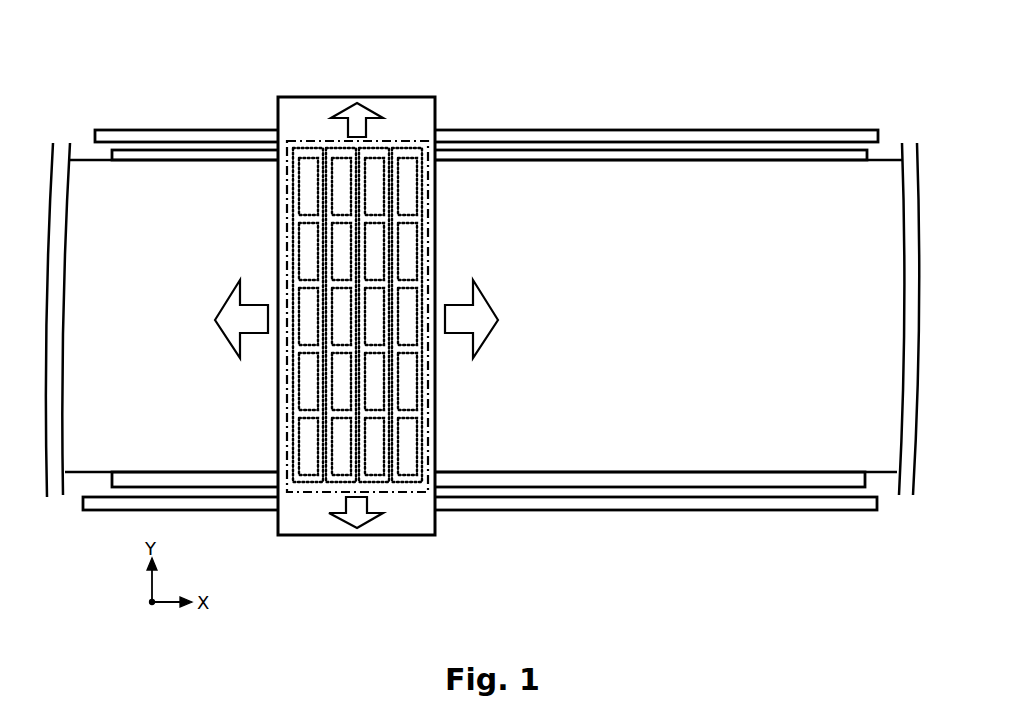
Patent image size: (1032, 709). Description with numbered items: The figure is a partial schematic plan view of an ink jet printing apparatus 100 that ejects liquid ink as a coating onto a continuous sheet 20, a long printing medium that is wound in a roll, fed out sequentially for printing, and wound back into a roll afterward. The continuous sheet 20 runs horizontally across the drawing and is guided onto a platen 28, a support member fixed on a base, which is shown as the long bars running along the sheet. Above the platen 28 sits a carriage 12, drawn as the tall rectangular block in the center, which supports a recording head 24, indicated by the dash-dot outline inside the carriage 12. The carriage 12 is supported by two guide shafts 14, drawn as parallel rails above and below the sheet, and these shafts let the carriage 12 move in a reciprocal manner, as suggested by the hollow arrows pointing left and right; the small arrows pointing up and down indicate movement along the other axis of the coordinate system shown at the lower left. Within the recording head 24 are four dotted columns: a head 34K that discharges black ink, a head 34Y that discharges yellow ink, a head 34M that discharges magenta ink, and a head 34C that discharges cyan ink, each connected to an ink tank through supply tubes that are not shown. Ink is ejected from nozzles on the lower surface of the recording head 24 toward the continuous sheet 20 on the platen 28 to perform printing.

The ink jet printing apparatus 100 is at (760, 46).
The carriage 12 is at (437, 105).
The guide shafts 14 is at (143, 130).
The continuous sheet 20 is at (802, 448).
The recording head 24 is at (290, 137).
The platen 28 is at (687, 489).
The head 34K is at (303, 486).
The head 34Y is at (335, 486).
The head 34M is at (375, 486).
The head 34C is at (405, 486).